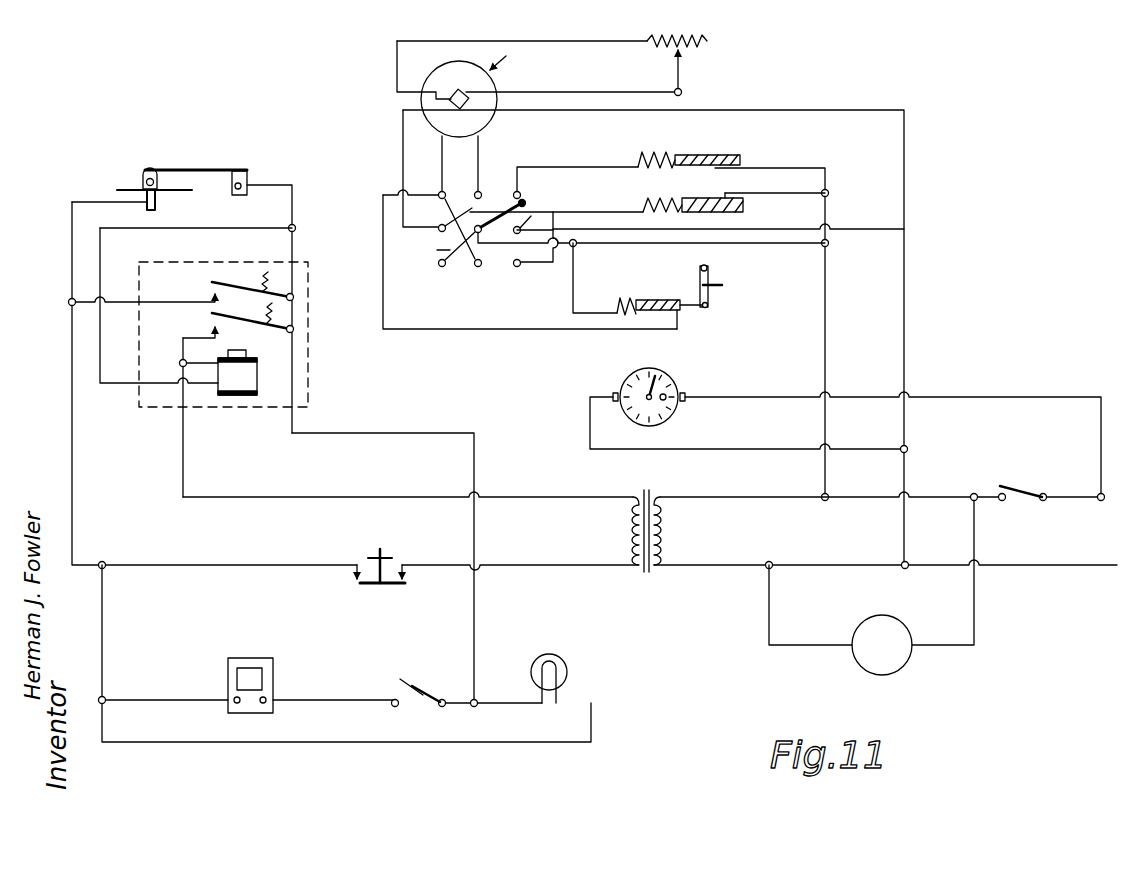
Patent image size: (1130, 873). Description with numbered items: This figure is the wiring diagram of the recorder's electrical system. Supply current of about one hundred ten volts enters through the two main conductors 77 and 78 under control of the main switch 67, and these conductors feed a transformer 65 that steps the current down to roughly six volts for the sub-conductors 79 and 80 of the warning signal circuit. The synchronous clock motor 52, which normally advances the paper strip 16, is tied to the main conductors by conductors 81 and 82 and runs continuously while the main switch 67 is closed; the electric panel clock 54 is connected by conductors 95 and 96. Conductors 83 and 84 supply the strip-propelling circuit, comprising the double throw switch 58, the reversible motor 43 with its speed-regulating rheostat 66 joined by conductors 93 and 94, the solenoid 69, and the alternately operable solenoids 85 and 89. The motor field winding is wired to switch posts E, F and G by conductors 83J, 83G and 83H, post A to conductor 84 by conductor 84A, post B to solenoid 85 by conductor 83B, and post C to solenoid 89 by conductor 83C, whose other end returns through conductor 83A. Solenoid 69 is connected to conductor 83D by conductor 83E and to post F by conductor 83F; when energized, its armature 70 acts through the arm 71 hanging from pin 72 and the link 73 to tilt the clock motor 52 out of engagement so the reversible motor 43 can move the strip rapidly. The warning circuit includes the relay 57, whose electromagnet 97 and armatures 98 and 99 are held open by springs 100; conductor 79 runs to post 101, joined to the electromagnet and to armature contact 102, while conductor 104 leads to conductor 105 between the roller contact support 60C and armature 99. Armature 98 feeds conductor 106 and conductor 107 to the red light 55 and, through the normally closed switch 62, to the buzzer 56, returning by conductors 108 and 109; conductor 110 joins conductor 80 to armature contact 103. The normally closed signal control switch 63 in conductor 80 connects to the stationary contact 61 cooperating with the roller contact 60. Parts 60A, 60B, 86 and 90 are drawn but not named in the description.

The paper strip 16 is at (142, 182).
The reversible motor 43 is at (437, 69).
The electric clock motor 52 is at (855, 652).
The electric panel clock 54 is at (665, 378).
The visual red light warning signal 55 is at (562, 664).
The audible warning signal or buzzer 56 is at (255, 680).
The relay 57 is at (314, 385).
The double throw switch 58 is at (525, 200).
The roller contact 60 is at (142, 180).
The roller 60A is at (148, 172).
The bar 60B is at (212, 157).
The roller contact support 60C is at (249, 178).
The stationary contact 61 is at (158, 196).
The audible signal switch 62 is at (440, 660).
The signal control switch 63 is at (362, 555).
The transformer 65 is at (648, 572).
The speed-regulating rheostat 66 is at (680, 57).
The main switch 67 is at (1018, 488).
The solenoid 69 is at (645, 300).
The armature 70 is at (664, 300).
The arm 71 is at (709, 295).
The pin 72 is at (702, 266).
The link 73 is at (718, 283).
The main conductor 77 is at (700, 497).
The main conductor 78 is at (718, 565).
The sub-conductor 79 is at (184, 452).
The sub-conductor 80 is at (72, 257).
The conductor 81 is at (975, 605).
The conductor 82 is at (770, 614).
The conductor 83 is at (805, 168).
The conductor 83A is at (798, 195).
The conductor 83B is at (609, 167).
The conductor 83C is at (541, 270).
The conductor 83D is at (635, 244).
The conductor 83E is at (573, 290).
The conductor 83F is at (504, 330).
The conductor 83G is at (440, 156).
The conductor 83H is at (485, 133).
The conductor 83J is at (385, 166).
The conductor 84 is at (806, 108).
The conductor 84A is at (608, 229).
The solenoid 85 is at (660, 149).
The resistor 86 is at (730, 154).
The solenoid 89 is at (665, 198).
The resistor 90 is at (744, 208).
The conductor 93 is at (628, 42).
The conductor 94 is at (625, 90).
The conductor 95 is at (785, 397).
The conductor 96 is at (770, 449).
The electromagnet 97 is at (240, 375).
The armature 98 is at (294, 329).
The armature 99 is at (294, 297).
The springs 100 is at (251, 298).
The post 101 is at (181, 363).
The armature contact 102 is at (212, 327).
The armature contact 103 is at (212, 294).
The conductor 104 is at (260, 228).
The conductor 105 is at (292, 248).
The conductor 106 is at (409, 433).
The conductor 107 is at (348, 700).
The conductor 108 is at (103, 652).
The conductor 109 is at (183, 700).
The conductor 110 is at (128, 305).